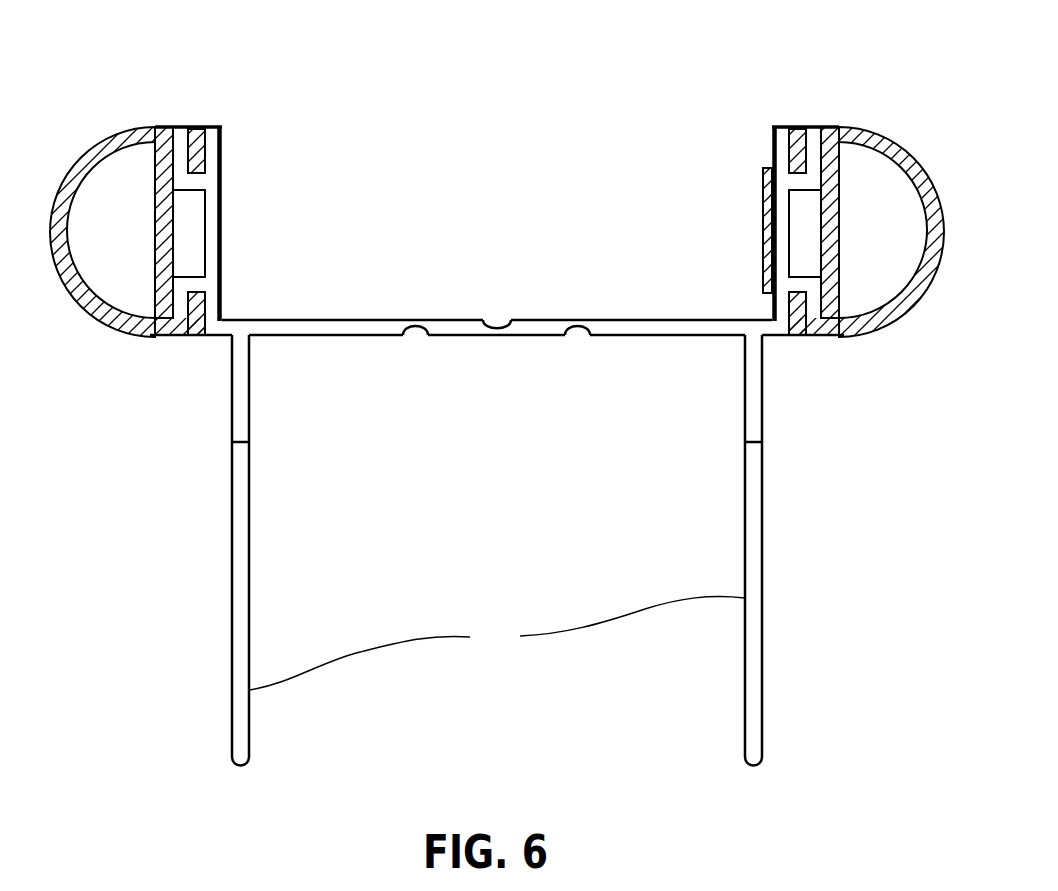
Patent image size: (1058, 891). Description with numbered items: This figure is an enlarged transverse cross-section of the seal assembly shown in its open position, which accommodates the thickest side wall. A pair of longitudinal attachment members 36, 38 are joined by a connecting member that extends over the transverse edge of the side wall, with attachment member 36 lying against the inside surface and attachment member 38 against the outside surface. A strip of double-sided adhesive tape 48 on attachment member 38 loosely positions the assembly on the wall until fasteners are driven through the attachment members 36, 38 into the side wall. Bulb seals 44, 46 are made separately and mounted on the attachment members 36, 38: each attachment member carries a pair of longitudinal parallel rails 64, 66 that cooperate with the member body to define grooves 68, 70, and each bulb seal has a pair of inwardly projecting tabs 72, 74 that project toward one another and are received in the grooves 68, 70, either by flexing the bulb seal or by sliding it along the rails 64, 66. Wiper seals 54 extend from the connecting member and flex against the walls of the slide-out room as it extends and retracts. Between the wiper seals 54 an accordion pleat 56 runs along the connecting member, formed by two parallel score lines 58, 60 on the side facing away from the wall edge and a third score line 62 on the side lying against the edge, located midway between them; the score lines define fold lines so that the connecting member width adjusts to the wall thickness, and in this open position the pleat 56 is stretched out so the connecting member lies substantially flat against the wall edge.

The attachment member 36 is at (224, 232).
The attachment member 38 is at (880, 208).
The bulb seal 44 is at (118, 142).
The bulb seal 46 is at (926, 290).
The double-sided adhesive tape 48 is at (763, 208).
The wiper seals 54 is at (497, 550).
The accordion pleat 56 is at (512, 345).
The score line 58 is at (577, 338).
The score line 60 is at (415, 334).
The third score line 62 is at (496, 320).
The rail 64 is at (182, 305).
The rail 66 is at (185, 157).
The groove 68 is at (213, 290).
The groove 70 is at (213, 168).
The tab 72 is at (197, 300).
The tab 74 is at (202, 153).